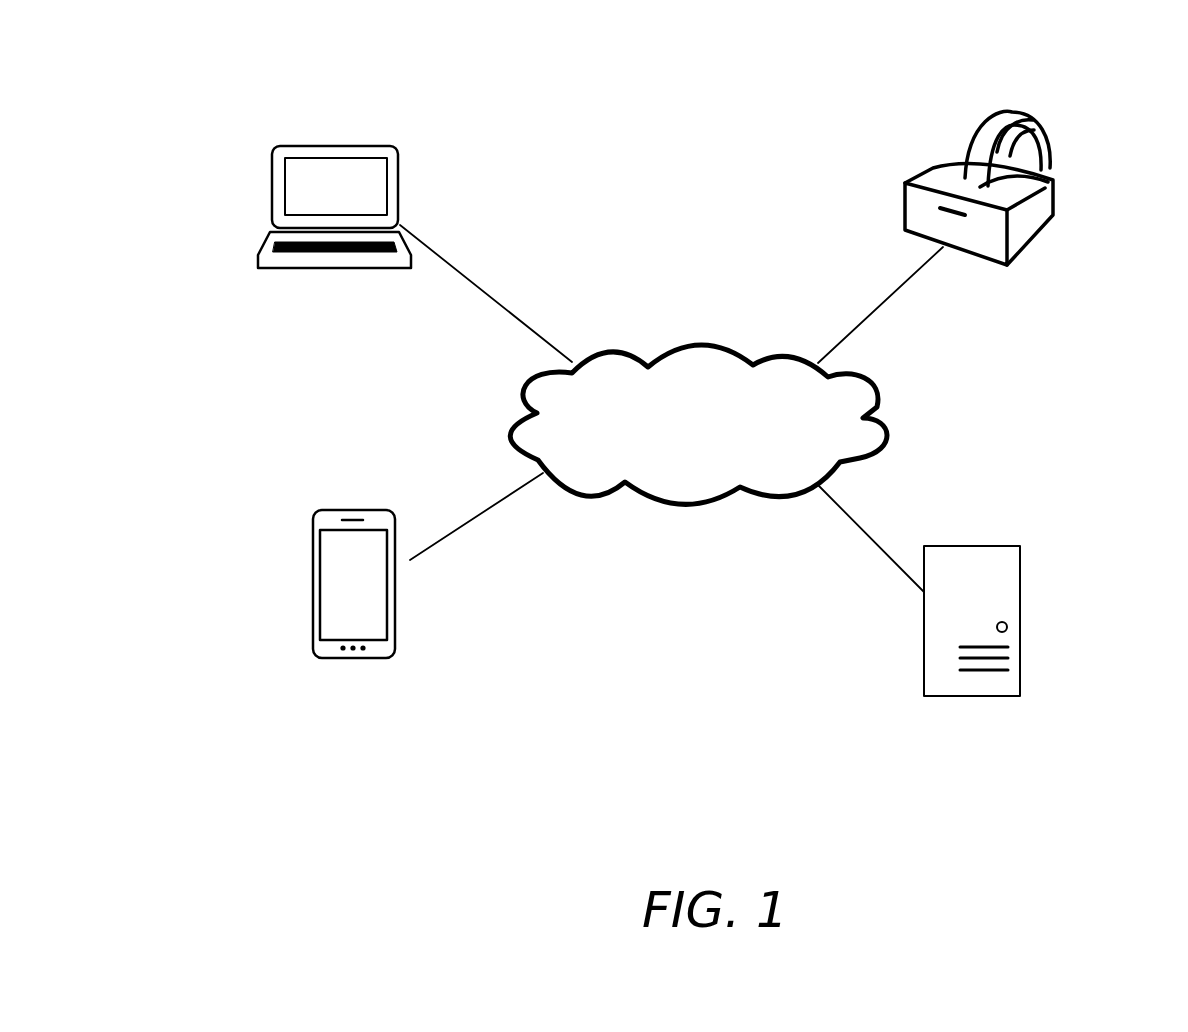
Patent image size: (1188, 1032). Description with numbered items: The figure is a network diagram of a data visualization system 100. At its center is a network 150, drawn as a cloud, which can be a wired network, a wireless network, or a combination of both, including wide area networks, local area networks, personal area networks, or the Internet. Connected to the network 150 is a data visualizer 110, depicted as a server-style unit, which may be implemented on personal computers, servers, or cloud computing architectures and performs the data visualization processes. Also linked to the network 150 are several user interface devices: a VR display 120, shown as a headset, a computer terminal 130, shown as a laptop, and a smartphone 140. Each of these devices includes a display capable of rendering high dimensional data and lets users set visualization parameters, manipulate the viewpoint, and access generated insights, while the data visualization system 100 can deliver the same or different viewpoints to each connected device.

The data visualization system 100 is at (634, 113).
The data visualizer 110 is at (1020, 620).
The VR display 120 is at (1053, 181).
The computer terminal 130 is at (271, 163).
The smartphone 140 is at (313, 588).
The network 150 is at (697, 348).